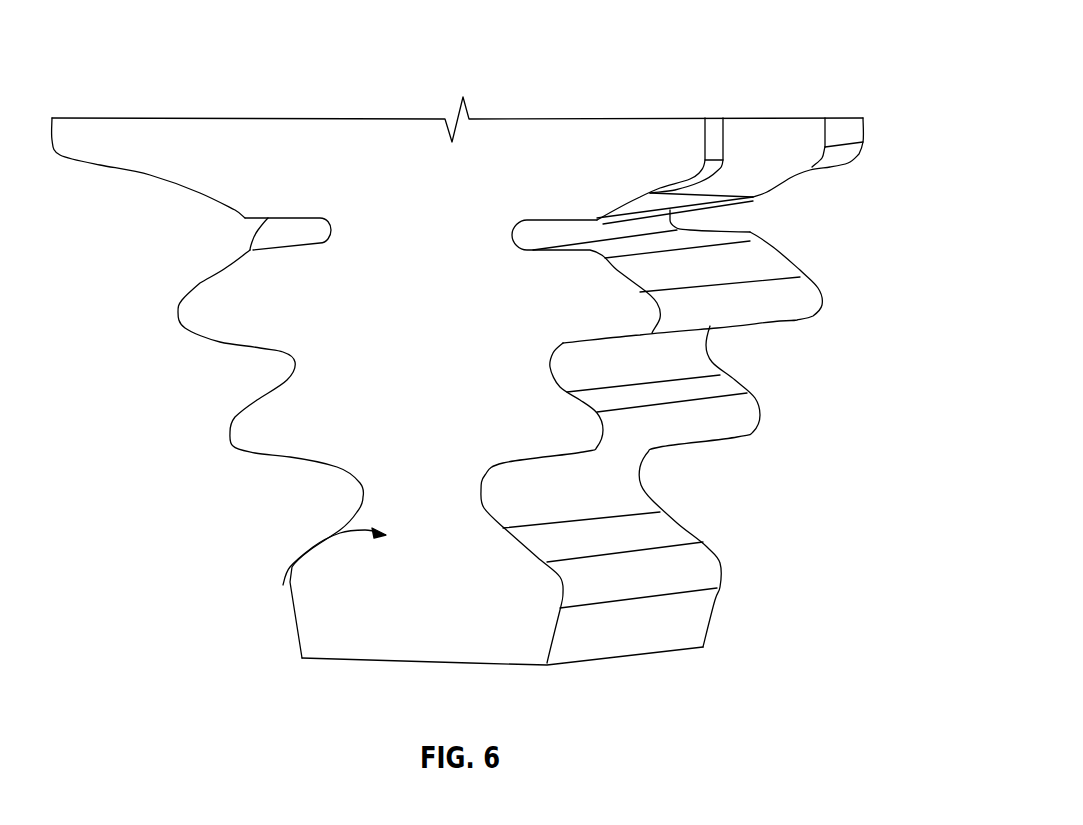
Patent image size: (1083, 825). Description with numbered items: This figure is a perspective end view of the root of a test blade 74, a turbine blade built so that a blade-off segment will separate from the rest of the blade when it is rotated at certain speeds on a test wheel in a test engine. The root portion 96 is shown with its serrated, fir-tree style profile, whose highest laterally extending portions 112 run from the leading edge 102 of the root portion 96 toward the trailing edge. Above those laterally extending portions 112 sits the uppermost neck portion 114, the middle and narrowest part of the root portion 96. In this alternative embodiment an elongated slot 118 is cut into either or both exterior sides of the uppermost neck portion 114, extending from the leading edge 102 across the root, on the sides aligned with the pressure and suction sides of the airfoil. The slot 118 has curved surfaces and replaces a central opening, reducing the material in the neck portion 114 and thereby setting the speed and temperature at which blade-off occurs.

The test blade 74 is at (800, 71).
The root portion 96 is at (283, 585).
The leading edge 102 is at (393, 380).
The laterally extending portions 112 is at (178, 312).
The uppermost neck portion 114 is at (245, 218).
The elongated slot 118 is at (250, 250).